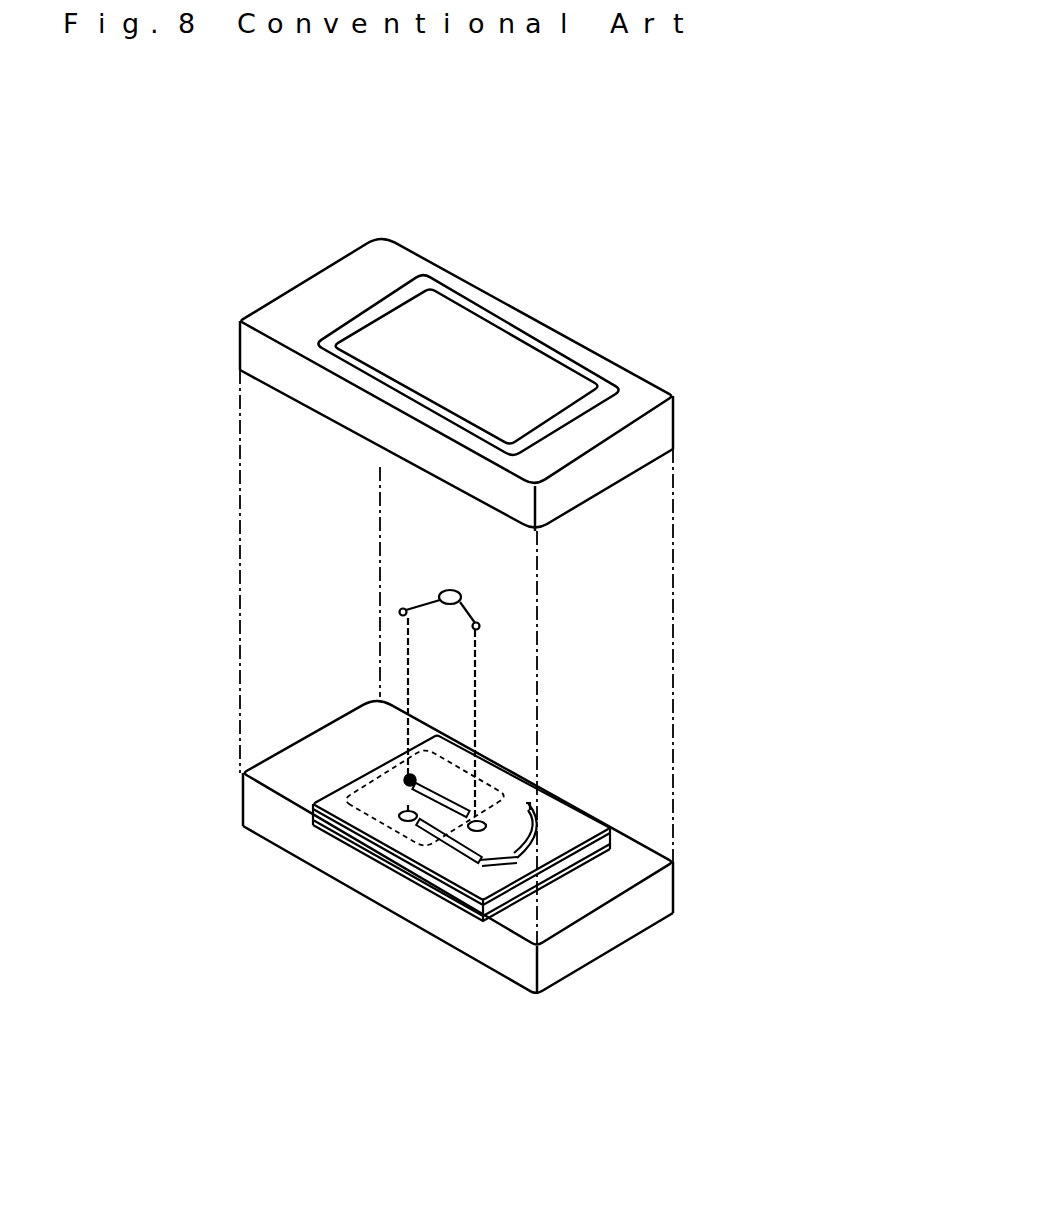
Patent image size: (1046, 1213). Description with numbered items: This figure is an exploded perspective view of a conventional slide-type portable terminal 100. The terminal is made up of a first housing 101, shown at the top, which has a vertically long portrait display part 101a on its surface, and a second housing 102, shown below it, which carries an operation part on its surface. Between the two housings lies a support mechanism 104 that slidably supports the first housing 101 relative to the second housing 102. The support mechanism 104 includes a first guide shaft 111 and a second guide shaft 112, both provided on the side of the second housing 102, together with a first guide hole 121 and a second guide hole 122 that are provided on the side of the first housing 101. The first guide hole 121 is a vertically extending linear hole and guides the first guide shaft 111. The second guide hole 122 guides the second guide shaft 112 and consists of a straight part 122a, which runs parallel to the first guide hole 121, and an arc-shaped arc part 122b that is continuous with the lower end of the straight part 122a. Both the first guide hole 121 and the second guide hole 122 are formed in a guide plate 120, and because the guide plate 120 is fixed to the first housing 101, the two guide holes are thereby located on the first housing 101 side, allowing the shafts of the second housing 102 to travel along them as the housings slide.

The slide-type portable terminal 100 is at (693, 242).
The first housing 101 is at (387, 248).
The portrait display part 101a is at (488, 338).
The second housing 102 is at (487, 952).
The support mechanism 104 is at (337, 812).
The first guide shaft 111 is at (408, 774).
The second guide shaft 112 is at (403, 812).
The guide plate 120 is at (567, 810).
The first guide hole 121 is at (440, 797).
The second guide hole 122 is at (747, 963).
The straight part 122a is at (477, 833).
The arc part 122b is at (537, 852).